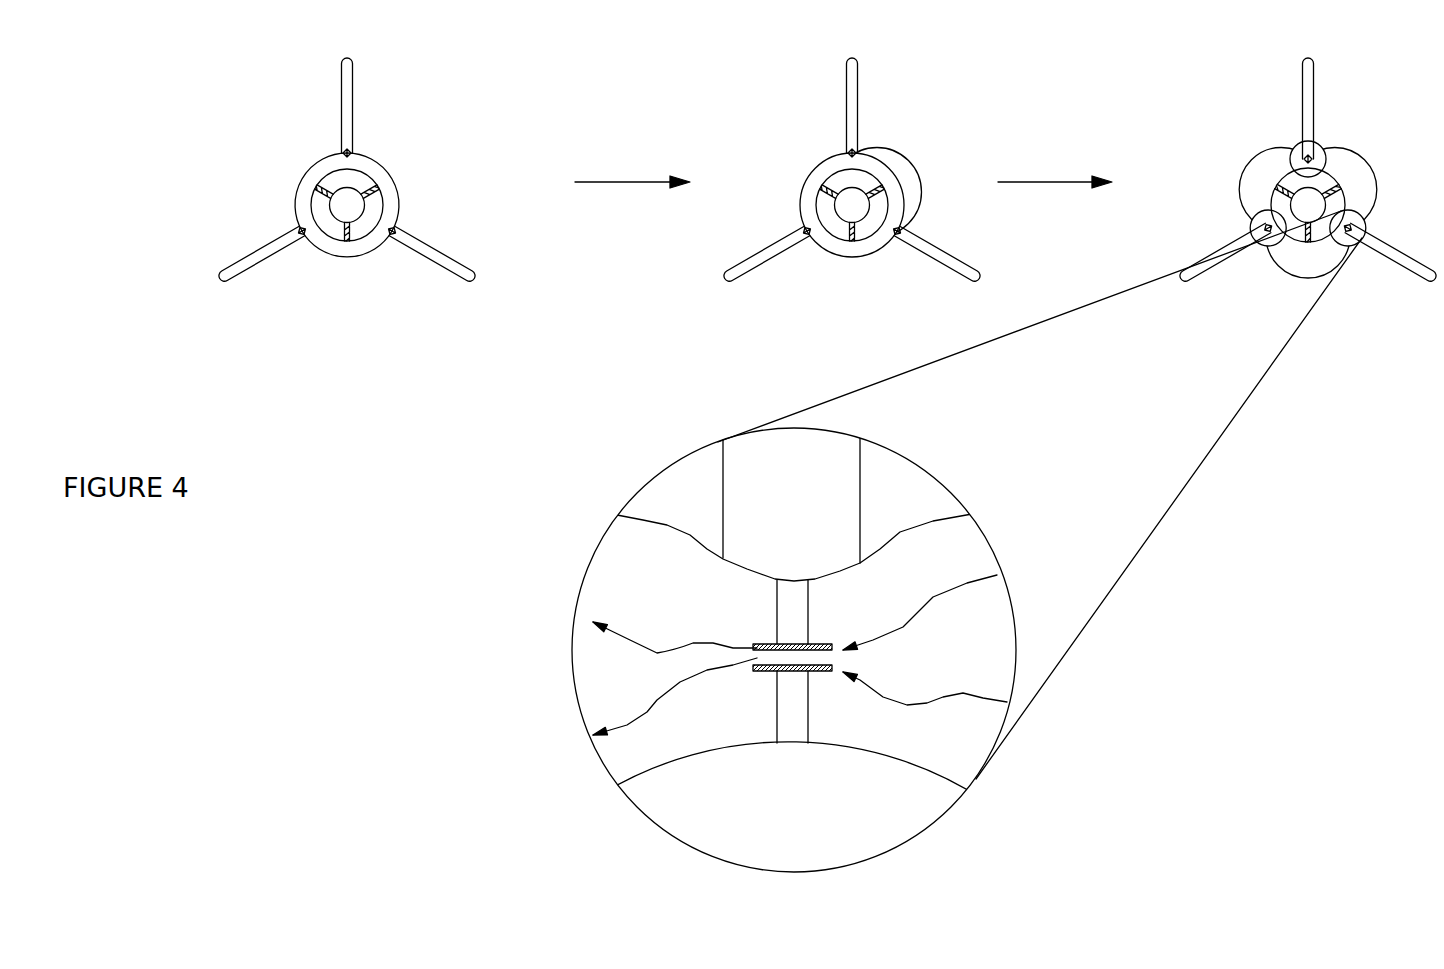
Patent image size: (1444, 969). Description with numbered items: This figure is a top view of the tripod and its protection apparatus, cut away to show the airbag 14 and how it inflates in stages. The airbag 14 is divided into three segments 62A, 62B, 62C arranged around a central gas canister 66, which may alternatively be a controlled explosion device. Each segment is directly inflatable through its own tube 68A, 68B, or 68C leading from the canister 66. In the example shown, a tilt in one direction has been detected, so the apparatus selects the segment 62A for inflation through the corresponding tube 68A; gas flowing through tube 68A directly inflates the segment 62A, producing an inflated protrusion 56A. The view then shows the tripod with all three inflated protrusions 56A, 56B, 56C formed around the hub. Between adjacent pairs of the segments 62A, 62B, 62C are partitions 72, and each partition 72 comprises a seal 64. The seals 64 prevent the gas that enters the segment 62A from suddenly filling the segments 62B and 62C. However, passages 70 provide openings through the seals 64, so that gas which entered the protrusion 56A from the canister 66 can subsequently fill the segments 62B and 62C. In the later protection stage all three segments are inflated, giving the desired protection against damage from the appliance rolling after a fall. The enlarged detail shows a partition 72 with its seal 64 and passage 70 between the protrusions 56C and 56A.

The airbag 14 is at (282, 202).
The segment 62A is at (388, 177).
The segment 62B is at (303, 167).
The segment 62C is at (352, 260).
The gas canister 66 is at (848, 208).
The tube 68A is at (872, 173).
The tube 68B is at (830, 175).
The tube 68C is at (873, 243).
The inflated protrusion 56A is at (918, 173).
The inflated protrusion 56B is at (1247, 162).
The inflated protrusion 56C is at (1305, 273).
The seal 64 is at (808, 603).
The passage 70 is at (785, 672).
The partition 72 is at (1318, 145).